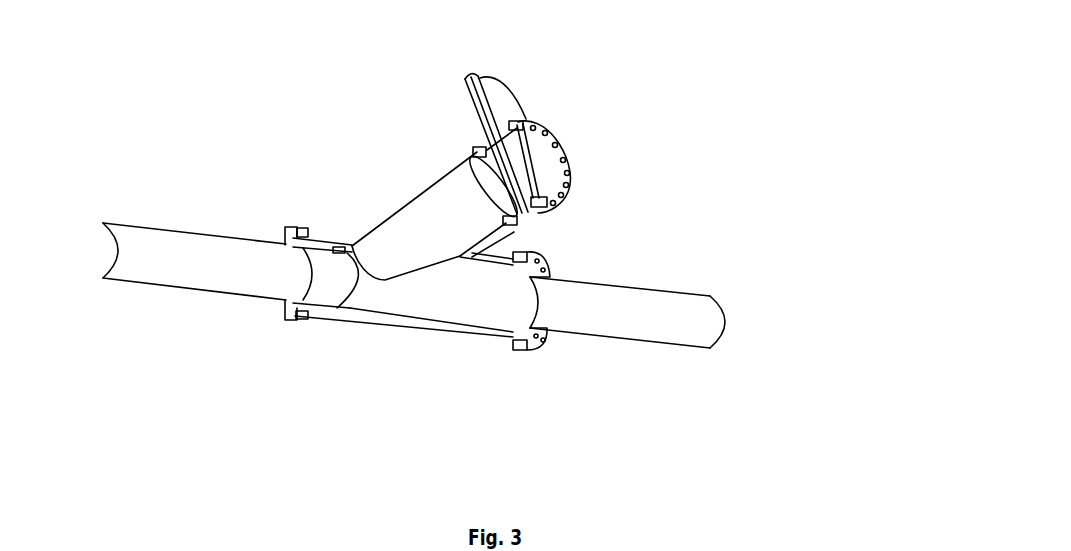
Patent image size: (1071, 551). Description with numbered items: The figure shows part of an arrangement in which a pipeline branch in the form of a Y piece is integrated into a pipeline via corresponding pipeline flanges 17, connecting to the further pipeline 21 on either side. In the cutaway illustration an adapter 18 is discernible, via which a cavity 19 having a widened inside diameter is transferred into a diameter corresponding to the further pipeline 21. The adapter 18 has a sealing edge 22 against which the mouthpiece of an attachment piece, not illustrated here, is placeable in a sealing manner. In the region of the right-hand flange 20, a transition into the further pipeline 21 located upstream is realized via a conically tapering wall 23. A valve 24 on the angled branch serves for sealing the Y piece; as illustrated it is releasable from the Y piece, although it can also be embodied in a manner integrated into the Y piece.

The pipeline flange 17 is at (306, 230).
The adapter 18 is at (321, 292).
The cavity 19 is at (452, 310).
The right-hand flange 20 is at (533, 343).
The further pipeline 21 is at (197, 257).
The sealing edge 22 is at (328, 302).
The conically tapering wall 23 is at (513, 333).
The valve 24 is at (544, 95).